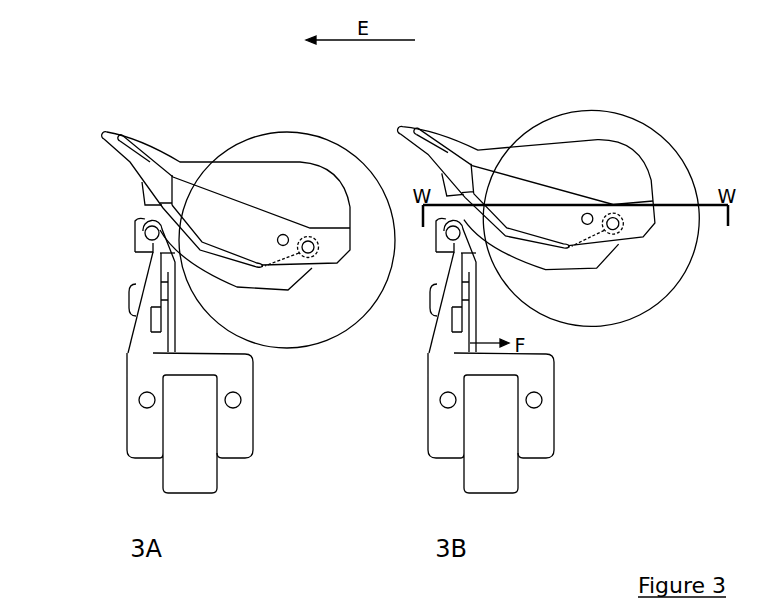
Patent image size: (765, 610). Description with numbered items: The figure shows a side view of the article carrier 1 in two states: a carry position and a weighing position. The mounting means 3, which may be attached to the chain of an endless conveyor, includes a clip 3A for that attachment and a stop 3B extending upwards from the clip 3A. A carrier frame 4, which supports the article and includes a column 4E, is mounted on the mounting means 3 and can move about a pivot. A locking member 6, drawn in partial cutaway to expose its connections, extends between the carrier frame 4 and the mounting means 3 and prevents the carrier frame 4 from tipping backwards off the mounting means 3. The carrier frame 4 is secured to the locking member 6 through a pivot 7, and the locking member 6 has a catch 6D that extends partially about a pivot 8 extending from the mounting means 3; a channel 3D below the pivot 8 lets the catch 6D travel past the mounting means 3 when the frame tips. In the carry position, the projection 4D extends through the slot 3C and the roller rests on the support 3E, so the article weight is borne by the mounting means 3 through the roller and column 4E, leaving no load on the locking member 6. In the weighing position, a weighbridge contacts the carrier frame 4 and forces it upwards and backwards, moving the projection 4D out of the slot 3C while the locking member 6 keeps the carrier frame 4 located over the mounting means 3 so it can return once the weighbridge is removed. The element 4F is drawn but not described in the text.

In FIG. 3A, the article carrier 1 is at (198, 111).
In FIG. 3B, the article carrier 1 is at (515, 108).
In FIG. 3A, the mounting means 3 is at (110, 434).
In FIG. 3A, the clip 3A is at (243, 432).
In FIG. 3A, the stop 3B is at (146, 269).
In FIG. 3A, the slot 3C is at (152, 331).
In FIG. 3A, the channel 3D is at (143, 253).
In FIG. 3A, the support 3E is at (215, 348).
In FIG. 3A, the carrier frame 4 is at (208, 147).
In FIG. 3A, the projection 4D is at (133, 302).
In FIG. 3A, the column 4E is at (158, 336).
In FIG. 3A, the upper block 4F is at (130, 315).
In FIG. 3A, the locking member 6 is at (145, 213).
In FIG. 3A, the catch 6D is at (141, 238).
In FIG. 3A, the pivot 7 is at (312, 251).
In FIG. 3A, the pivot 8 is at (147, 231).